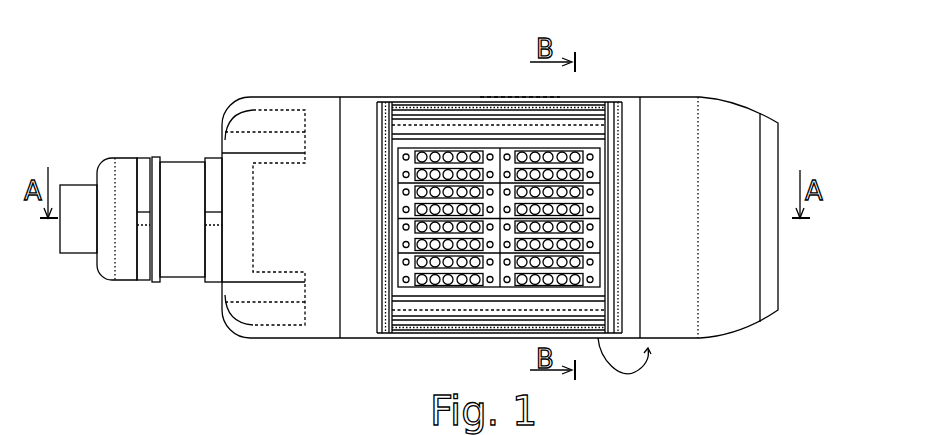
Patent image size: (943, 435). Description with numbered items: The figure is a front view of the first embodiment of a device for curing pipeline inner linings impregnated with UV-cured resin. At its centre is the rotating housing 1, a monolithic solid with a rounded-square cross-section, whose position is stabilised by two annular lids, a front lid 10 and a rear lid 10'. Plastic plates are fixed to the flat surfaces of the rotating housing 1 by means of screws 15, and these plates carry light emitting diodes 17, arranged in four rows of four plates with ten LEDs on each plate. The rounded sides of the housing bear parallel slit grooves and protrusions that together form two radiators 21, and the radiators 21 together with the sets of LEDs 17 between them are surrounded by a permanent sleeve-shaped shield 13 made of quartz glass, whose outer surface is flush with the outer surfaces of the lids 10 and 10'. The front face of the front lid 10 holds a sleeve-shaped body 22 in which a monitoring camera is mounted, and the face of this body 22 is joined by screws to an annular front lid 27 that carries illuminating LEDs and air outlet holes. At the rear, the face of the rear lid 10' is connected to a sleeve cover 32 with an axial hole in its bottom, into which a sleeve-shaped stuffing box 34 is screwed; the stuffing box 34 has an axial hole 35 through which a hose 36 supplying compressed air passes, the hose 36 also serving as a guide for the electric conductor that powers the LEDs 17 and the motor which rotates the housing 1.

The front lid 10 is at (500, 187).
The rear lid 10' is at (338, 187).
The sleeve cover 32 is at (280, 120).
The sleeve-shaped body 22 is at (670, 128).
The annular front lid 27 is at (768, 140).
The rotating housing 1 is at (422, 195).
The radiators 21 is at (473, 134).
The sleeve-shaped shield 13 is at (527, 92).
The light emitting diodes 17 is at (565, 192).
The screws 15 is at (406, 283).
The axial hole 35 is at (96, 122).
The hose 36 is at (70, 195).
The stuffing box 34 is at (187, 175).